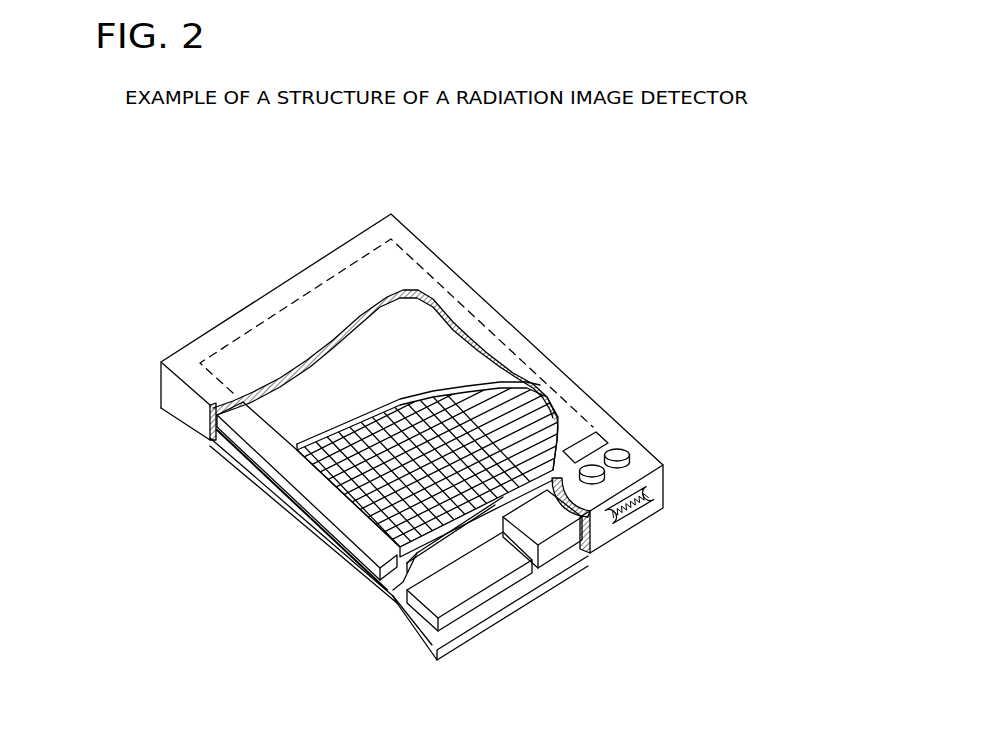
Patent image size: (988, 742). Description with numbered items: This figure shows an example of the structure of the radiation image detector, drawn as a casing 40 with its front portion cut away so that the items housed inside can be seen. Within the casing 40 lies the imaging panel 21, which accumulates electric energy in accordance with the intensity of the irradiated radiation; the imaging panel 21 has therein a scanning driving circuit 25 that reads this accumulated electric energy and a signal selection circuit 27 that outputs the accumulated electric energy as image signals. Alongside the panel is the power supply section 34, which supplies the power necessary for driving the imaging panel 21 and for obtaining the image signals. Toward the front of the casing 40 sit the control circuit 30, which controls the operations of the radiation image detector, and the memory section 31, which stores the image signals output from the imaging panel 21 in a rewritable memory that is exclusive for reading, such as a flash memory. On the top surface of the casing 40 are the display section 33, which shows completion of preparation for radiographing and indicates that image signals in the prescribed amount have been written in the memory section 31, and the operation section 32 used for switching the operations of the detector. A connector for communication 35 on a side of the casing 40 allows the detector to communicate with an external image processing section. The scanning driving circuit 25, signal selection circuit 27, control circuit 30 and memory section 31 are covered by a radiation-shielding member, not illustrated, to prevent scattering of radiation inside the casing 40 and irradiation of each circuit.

The casing 40 is at (407, 230).
The imaging panel 21 is at (418, 332).
The scanning driving circuit 25 is at (343, 513).
The power supply section 34 is at (282, 487).
The signal selection circuit 27 is at (548, 610).
The memory section 31 is at (487, 598).
The control circuit 30 is at (557, 550).
The display section 33 is at (600, 434).
The operation section 32 is at (618, 449).
The connector for communication 35 is at (633, 512).